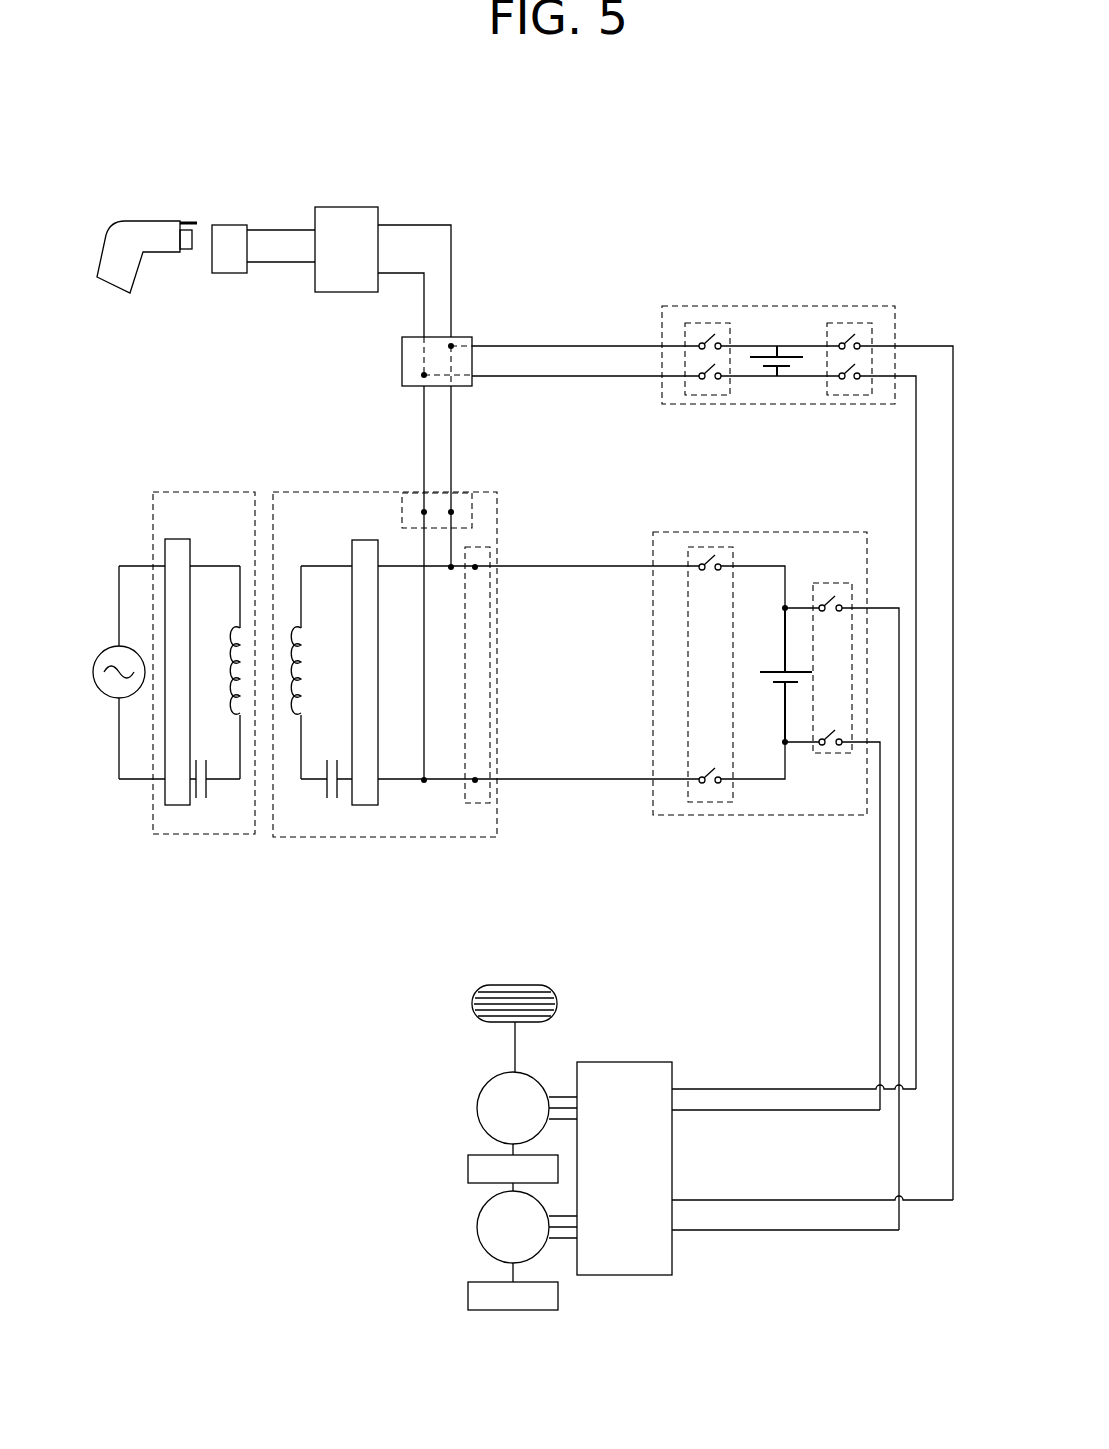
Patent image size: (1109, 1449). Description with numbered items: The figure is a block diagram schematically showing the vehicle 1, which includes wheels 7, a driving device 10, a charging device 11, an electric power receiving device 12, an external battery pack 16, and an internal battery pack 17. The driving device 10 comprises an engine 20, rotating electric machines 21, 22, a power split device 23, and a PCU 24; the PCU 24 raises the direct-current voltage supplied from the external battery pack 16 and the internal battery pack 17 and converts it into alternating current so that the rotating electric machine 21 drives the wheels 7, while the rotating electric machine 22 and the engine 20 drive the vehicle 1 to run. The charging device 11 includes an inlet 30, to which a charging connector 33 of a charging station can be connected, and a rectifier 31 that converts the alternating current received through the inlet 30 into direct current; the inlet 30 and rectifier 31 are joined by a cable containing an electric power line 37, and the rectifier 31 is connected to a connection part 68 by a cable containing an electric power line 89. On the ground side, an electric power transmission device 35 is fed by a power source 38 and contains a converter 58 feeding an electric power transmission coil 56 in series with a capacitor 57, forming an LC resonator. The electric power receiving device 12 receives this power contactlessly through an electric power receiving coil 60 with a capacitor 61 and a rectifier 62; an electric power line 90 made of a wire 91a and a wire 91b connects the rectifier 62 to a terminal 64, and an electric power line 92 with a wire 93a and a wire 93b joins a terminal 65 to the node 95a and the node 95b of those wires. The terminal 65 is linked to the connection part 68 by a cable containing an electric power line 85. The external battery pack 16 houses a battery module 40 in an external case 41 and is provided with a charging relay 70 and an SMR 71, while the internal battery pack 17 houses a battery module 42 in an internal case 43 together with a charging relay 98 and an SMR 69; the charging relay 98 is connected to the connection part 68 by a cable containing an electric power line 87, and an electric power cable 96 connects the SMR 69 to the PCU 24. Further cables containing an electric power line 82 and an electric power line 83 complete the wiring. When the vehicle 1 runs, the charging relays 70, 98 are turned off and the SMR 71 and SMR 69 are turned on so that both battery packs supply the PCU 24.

The vehicle 1 is at (705, 187).
The wheels 7 is at (472, 1000).
The driving device 10 is at (665, 1019).
The charging device 11 is at (424, 171).
The electric power receiving device 12 is at (352, 492).
The external battery pack 16 is at (783, 446).
The internal battery pack 17 is at (742, 244).
The engine 20 is at (468, 1292).
The rotating electric machine 21 is at (477, 1228).
The rotating electric machine 22 is at (477, 1106).
The power split device 23 is at (468, 1166).
The PCU 24 is at (624, 1275).
The inlet 30 is at (230, 225).
The rectifier 31 is at (341, 207).
The charging connector 33 is at (150, 230).
The electric power transmission device 35 is at (170, 492).
The electric power line 37 is at (257, 264).
The power source 38 is at (130, 700).
The battery module 40 is at (797, 671).
The external case 41 is at (840, 583).
The battery module 42 is at (760, 356).
The internal case 43 is at (799, 306).
The electric power transmission coil 56 is at (237, 715).
The capacitor 57 is at (198, 800).
The converter 58 is at (177, 806).
The electric power receiving coil 60 is at (295, 702).
The capacitor 61 is at (328, 789).
The rectifier 62 is at (366, 806).
The terminal 64 is at (483, 803).
The terminal 65 is at (408, 493).
The connection part 68 is at (402, 352).
The SMR 69 is at (858, 323).
The charging relay 70 is at (708, 547).
The SMR 71 is at (850, 583).
The electric power line 82 is at (553, 780).
The electric power line 83 is at (880, 1022).
The electric power line 85 is at (451, 435).
The electric power line 87 is at (612, 346).
The electric power line 89 is at (424, 283).
The electric power line 90 is at (470, 868).
The wire 91a is at (399, 568).
The wire 91b is at (448, 780).
The electric power line 92 is at (562, 493).
The wire 93a is at (424, 552).
The wire 93b is at (451, 535).
The node 95a is at (424, 780).
The node 95b is at (451, 567).
The electric power cable 96 is at (916, 934).
The charging relay 98 is at (697, 323).